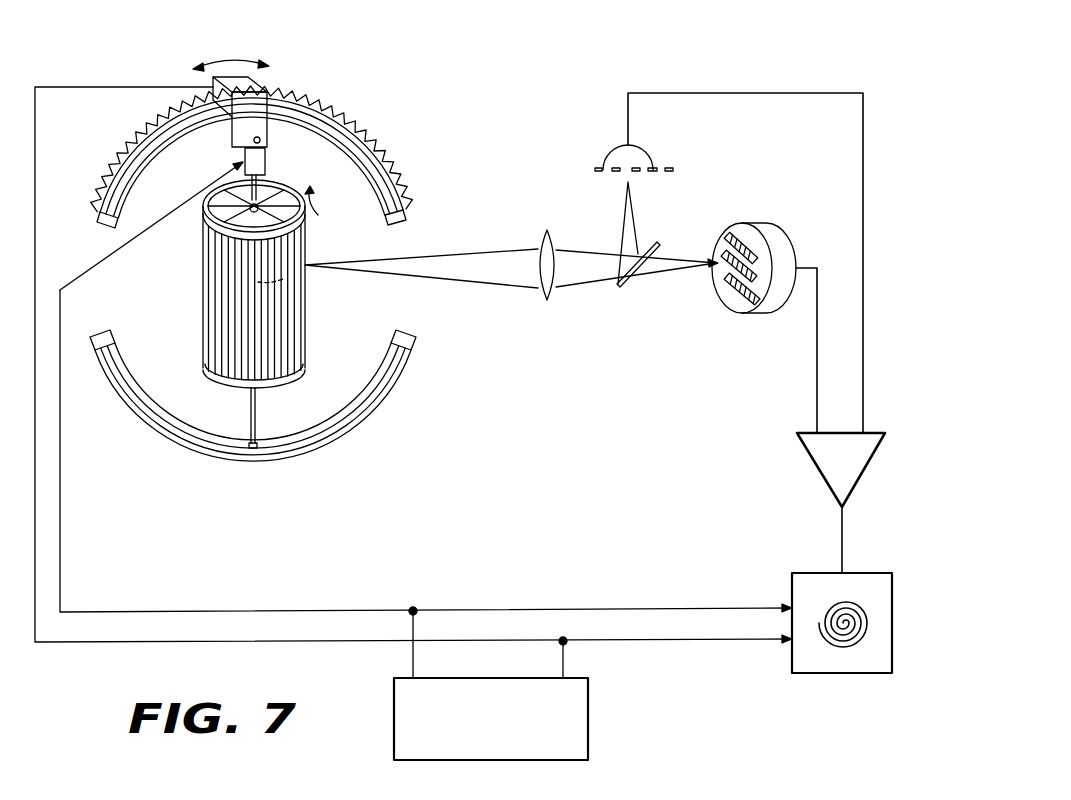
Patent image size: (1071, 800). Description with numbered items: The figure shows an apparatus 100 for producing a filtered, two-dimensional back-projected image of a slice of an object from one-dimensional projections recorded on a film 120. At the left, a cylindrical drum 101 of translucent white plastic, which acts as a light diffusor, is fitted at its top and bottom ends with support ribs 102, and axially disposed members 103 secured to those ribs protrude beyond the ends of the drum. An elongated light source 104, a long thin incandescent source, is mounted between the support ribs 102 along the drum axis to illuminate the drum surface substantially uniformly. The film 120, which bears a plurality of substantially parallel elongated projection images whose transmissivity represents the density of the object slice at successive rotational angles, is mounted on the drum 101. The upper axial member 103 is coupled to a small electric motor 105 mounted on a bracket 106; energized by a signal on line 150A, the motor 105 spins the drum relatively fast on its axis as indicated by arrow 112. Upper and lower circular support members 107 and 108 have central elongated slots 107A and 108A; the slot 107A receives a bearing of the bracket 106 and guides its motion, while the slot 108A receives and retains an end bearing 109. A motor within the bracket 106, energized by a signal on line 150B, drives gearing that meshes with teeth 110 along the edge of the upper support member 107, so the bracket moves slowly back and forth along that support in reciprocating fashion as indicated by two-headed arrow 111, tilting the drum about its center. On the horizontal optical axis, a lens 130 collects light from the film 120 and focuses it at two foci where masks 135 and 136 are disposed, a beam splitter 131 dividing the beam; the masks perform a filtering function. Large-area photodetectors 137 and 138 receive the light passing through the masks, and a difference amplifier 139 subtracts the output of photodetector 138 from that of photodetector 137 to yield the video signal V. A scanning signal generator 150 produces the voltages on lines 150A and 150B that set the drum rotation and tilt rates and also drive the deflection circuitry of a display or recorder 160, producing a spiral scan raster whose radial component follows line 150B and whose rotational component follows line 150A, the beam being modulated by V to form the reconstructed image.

The apparatus 100 is at (236, 671).
The cylindrical drum 101 is at (254, 297).
The support ribs 102 is at (259, 225).
The axially disposed members 103 is at (243, 177).
The elongated light source 104 is at (230, 225).
The electric motor 105 is at (268, 160).
The bracket 106 is at (268, 80).
The upper circular support member 107 is at (286, 163).
The central elongated slot 107A is at (413, 216).
The lower circular support member 108 is at (283, 389).
The central elongated slot 108A is at (410, 335).
The end bearing 109 is at (250, 447).
The teeth 110 is at (357, 123).
The two-headed arrow 111 is at (233, 58).
The arrow 112 is at (322, 203).
The film 120 is at (205, 328).
The lens 130 is at (549, 232).
The beam splitter 131 is at (621, 287).
The mask 135 is at (727, 236).
The mask 136 is at (594, 168).
The large-area photodetector 137 is at (740, 312).
The large-area photodetector 138 is at (647, 152).
The difference amplifier 139 is at (812, 460).
The scanning signal generator 150 is at (588, 708).
The line 150A is at (68, 292).
The line 150B is at (36, 135).
The display 160 is at (870, 573).